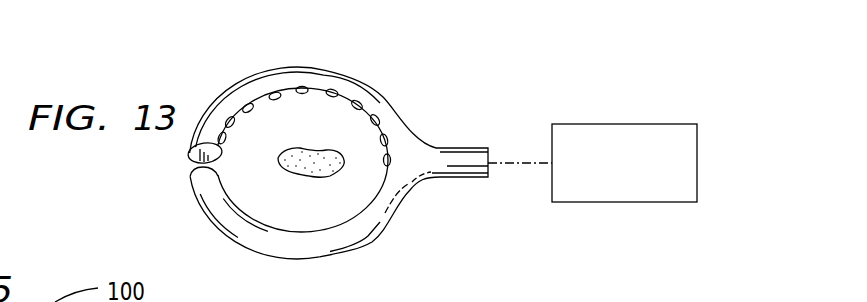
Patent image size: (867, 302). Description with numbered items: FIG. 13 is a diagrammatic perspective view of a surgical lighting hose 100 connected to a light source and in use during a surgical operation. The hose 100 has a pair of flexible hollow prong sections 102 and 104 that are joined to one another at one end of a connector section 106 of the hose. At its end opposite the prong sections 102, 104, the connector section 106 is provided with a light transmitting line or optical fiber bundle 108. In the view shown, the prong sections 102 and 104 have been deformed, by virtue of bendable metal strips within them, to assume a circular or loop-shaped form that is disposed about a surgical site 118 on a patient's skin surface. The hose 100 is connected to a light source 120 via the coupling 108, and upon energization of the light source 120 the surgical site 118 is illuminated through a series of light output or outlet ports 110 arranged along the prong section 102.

The surgical lighting hose 100 is at (422, 210).
The flexible hollow prong section 102 is at (257, 83).
The flexible hollow prong section 104 is at (320, 247).
The connector section 106 is at (467, 157).
The optical fiber bundle 108 is at (520, 166).
The light output port 110 is at (333, 96).
The surgical site 118 is at (323, 153).
The light source 120 is at (653, 124).